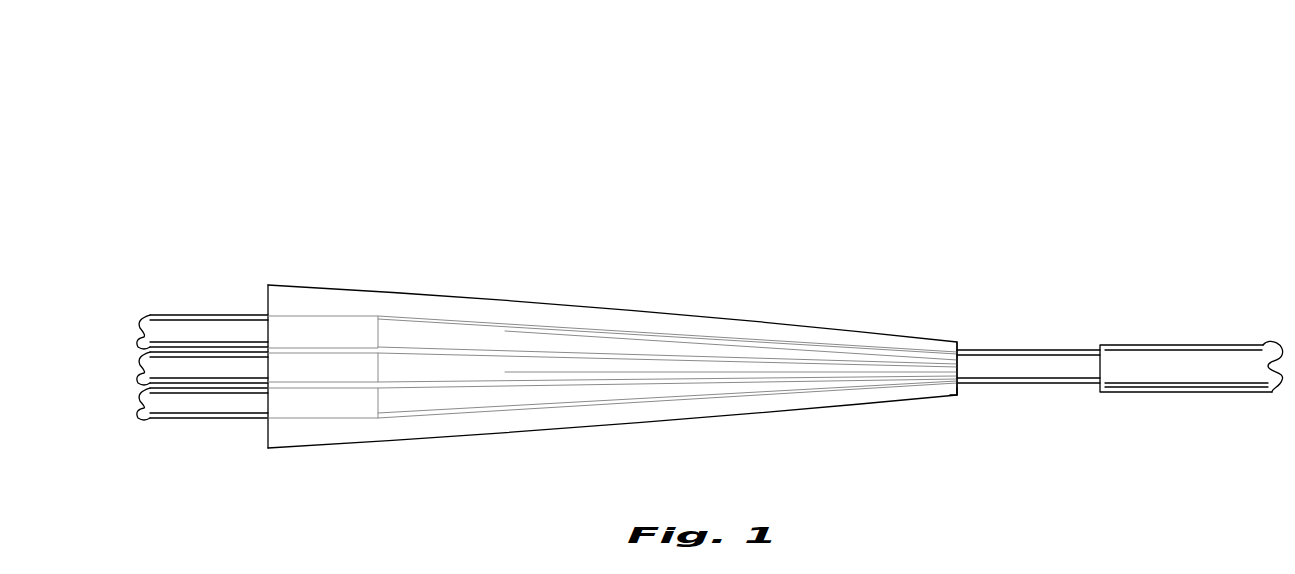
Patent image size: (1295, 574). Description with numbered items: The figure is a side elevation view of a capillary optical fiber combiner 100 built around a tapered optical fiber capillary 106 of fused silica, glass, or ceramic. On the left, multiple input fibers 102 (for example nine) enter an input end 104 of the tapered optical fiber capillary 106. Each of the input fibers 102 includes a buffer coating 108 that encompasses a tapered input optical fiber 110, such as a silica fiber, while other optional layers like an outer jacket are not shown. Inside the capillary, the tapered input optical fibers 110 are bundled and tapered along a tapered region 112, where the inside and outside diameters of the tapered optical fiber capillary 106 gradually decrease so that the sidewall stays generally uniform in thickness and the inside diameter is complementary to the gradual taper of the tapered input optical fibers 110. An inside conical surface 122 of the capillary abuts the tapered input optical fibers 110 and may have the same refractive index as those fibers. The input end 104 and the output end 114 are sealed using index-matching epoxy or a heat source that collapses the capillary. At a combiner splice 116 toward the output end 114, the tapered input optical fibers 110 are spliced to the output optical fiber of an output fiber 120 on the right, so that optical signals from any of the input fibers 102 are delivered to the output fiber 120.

The capillary optical fiber combiner 100 is at (886, 94).
The input fibers 102 is at (119, 403).
The input end 104 is at (261, 303).
The tapered optical fiber capillary 106 is at (400, 293).
The buffer coating 108 is at (182, 332).
The tapered input optical fiber 110 is at (634, 340).
The tapered region 112 is at (960, 190).
The output end 114 is at (962, 345).
The combiner splice 116 is at (949, 389).
The output fiber 120 is at (1170, 345).
The inside conical surface 122 is at (497, 300).